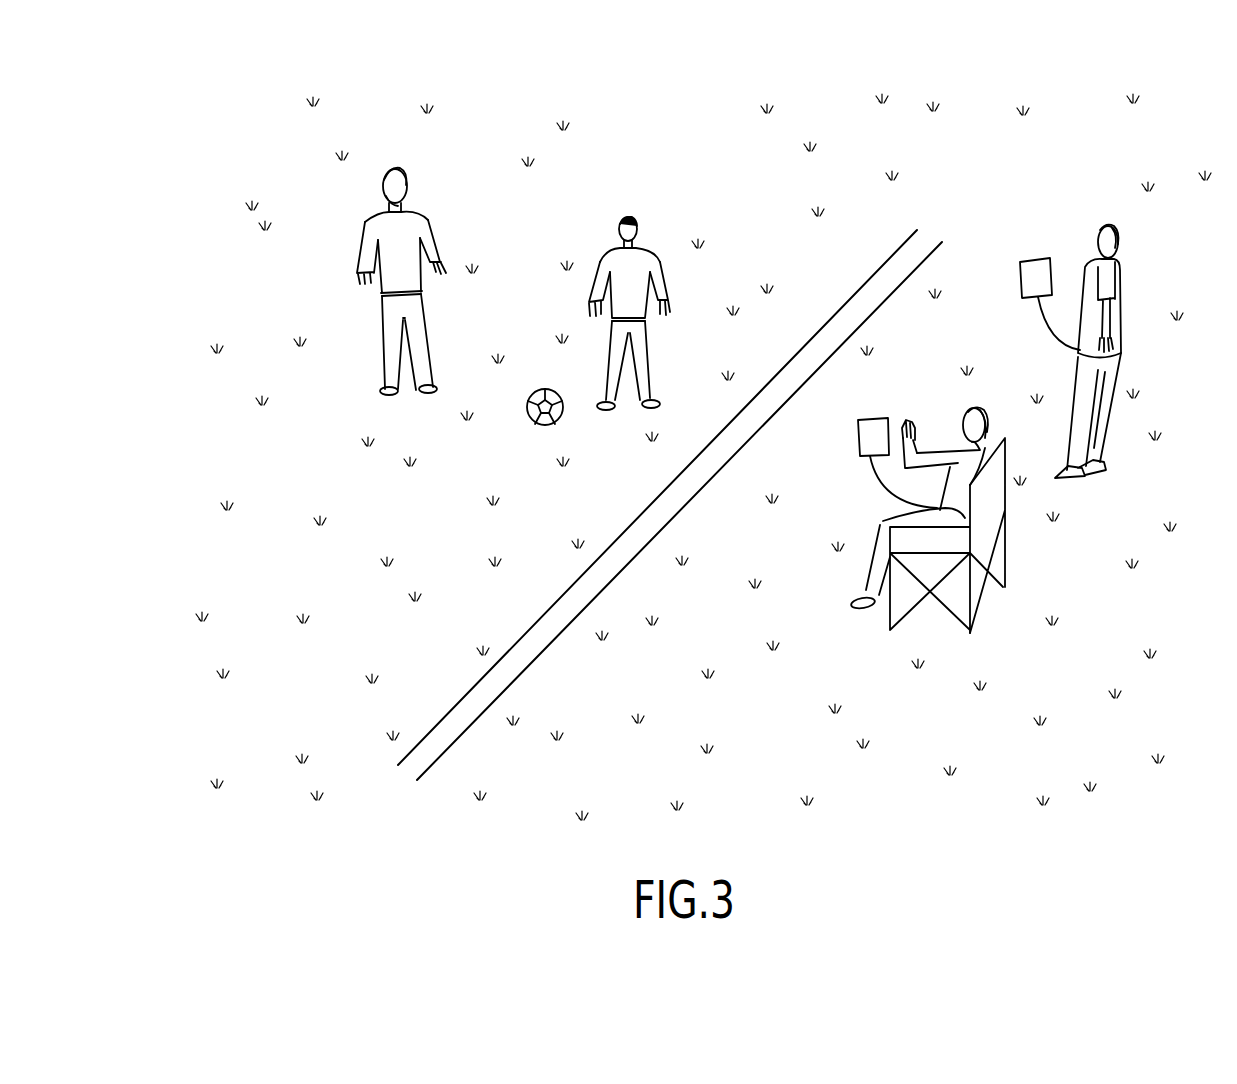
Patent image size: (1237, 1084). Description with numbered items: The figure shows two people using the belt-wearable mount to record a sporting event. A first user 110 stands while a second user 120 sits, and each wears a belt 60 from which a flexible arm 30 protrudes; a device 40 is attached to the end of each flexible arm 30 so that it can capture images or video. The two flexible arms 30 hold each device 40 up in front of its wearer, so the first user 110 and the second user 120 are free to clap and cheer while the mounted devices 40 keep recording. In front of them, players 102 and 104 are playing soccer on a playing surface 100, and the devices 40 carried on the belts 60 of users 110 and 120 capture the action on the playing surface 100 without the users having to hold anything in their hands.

The flexible arm 30 is at (1053, 330).
The device 40 is at (1019, 272).
The belt 60 is at (1005, 508).
The playing surface 100 is at (498, 602).
The player 102 is at (653, 250).
The player 104 is at (428, 215).
The first user 110 is at (1123, 278).
The second user 120 is at (873, 578).